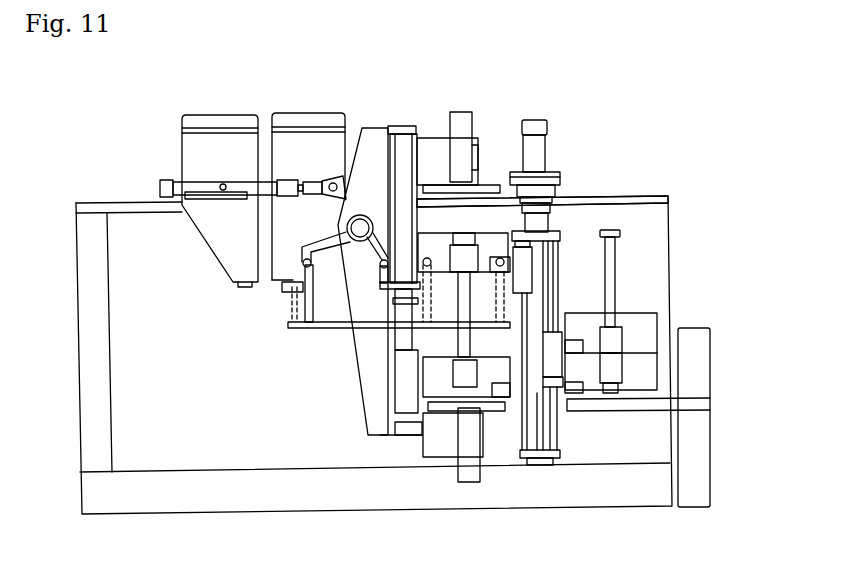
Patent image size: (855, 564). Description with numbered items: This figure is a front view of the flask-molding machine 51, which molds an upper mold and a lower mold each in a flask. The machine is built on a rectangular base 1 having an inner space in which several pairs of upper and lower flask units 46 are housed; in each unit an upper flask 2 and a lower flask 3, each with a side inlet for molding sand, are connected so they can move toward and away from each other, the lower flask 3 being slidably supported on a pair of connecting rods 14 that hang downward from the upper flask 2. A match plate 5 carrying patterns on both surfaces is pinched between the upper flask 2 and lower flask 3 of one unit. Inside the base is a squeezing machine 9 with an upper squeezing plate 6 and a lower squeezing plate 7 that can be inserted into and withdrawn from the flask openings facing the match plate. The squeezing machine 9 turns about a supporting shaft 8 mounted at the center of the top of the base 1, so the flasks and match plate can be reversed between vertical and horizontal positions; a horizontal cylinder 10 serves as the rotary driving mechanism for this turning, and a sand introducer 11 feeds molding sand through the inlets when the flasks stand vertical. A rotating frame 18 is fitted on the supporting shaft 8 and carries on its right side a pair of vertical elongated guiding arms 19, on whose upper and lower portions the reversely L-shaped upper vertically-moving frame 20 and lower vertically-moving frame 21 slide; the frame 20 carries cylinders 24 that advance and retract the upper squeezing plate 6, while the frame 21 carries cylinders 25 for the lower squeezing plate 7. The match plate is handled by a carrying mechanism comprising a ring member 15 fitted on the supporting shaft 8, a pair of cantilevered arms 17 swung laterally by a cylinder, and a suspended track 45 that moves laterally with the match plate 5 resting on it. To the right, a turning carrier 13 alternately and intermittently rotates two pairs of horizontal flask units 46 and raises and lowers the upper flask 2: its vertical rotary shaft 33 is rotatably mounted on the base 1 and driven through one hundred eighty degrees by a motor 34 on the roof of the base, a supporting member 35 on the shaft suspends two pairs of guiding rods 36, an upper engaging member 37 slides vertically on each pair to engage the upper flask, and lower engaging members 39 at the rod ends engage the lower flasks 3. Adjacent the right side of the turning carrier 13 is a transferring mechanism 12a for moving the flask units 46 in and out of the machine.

The base 1 is at (106, 200).
The upper flask 2 is at (601, 311).
The lower flask 3 is at (636, 384).
The match plate 5 is at (325, 330).
The upper squeezing plate 6 is at (440, 187).
The lower squeezing plate 7 is at (445, 405).
The supporting shaft 8 is at (358, 226).
The squeezing machine 9 is at (470, 110).
The horizontal cylinder 10 is at (178, 178).
The sand introducer 11 is at (326, 95).
The transferring mechanism 12a is at (730, 328).
The turning carrier 13 is at (542, 245).
The connecting rods 14 is at (637, 317).
The ring member 15 is at (358, 242).
The cantilevered arms 17 is at (283, 285).
The rotating frame 18 is at (372, 415).
The guiding arms 19 is at (405, 338).
The upper vertically-moving frame 20 is at (473, 153).
The lower vertically-moving frame 21 is at (483, 437).
The cylinders 24 is at (463, 120).
The cylinders 25 is at (462, 477).
The rotary shaft 33 is at (540, 223).
The motor 34 is at (543, 150).
The supporting member 35 is at (562, 237).
The guiding rods 36 is at (555, 298).
The upper engaging member 37 is at (497, 270).
The lower engaging members 39 is at (568, 404).
The suspended track 45 is at (293, 330).
The flask unit 46 is at (665, 195).
The flask-molding machine 51 is at (624, 118).